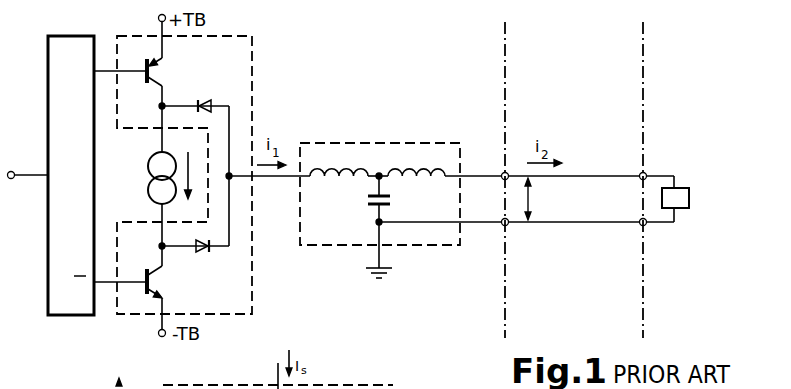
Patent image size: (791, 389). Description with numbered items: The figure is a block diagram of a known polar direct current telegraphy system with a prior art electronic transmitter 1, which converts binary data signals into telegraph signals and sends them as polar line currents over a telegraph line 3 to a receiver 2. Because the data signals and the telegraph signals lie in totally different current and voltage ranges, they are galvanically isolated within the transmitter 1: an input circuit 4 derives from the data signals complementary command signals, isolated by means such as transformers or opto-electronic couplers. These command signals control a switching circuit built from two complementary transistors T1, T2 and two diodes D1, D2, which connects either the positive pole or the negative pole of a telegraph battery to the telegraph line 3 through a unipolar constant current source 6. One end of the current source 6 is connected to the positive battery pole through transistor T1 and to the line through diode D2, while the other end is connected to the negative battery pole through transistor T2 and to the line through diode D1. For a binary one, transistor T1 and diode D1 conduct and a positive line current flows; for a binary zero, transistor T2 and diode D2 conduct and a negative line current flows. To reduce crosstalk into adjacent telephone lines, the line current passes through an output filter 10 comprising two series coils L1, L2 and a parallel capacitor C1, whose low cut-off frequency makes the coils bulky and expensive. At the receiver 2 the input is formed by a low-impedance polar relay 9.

The electronic transmitter 1 is at (444, 71).
The receiver 2 is at (679, 71).
The telegraph line 3 is at (590, 210).
The input circuit 4 is at (48, 108).
The unipolar constant current source 6 is at (147, 174).
The polar relay 9 is at (679, 210).
The output filter 10 is at (380, 189).
The transistor T1 is at (160, 71).
The transistor T2 is at (158, 279).
The diode D1 is at (208, 249).
The diode D2 is at (203, 100).
The series coil L1 is at (338, 179).
The series coil L2 is at (424, 178).
The parallel capacitor C1 is at (364, 222).